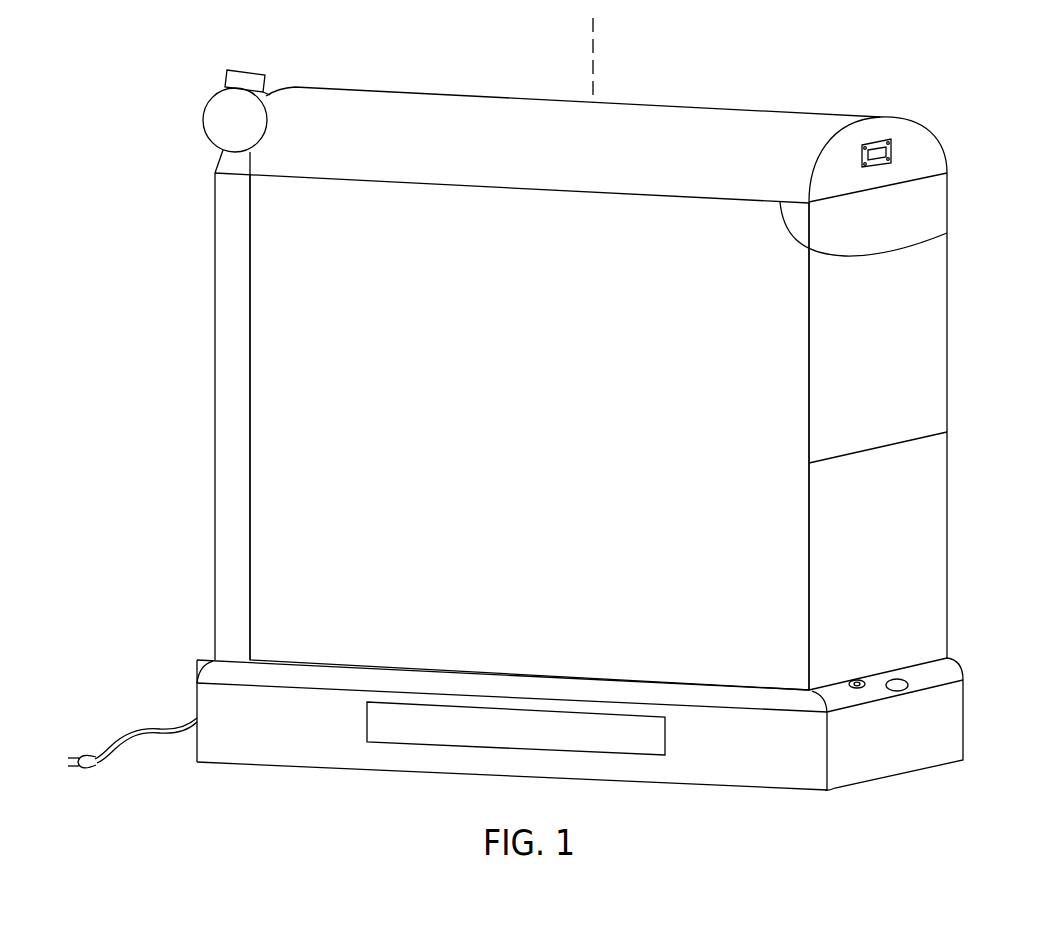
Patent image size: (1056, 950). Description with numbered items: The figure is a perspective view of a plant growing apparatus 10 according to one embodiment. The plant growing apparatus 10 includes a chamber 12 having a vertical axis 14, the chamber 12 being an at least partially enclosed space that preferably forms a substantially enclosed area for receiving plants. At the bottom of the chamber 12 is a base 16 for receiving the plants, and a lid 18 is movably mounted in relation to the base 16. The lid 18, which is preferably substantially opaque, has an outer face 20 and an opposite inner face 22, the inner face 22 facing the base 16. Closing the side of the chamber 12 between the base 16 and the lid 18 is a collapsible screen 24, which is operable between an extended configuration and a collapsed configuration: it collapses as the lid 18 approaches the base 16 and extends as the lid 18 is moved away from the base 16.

The plant growing apparatus 10 is at (166, 77).
The chamber 12 is at (181, 355).
The vertical axis 14 is at (592, 33).
The base 16 is at (197, 700).
The lid 18 is at (930, 137).
The outer face 20 is at (790, 140).
The inner face 22 is at (947, 237).
The collapsible screen 24 is at (533, 579).